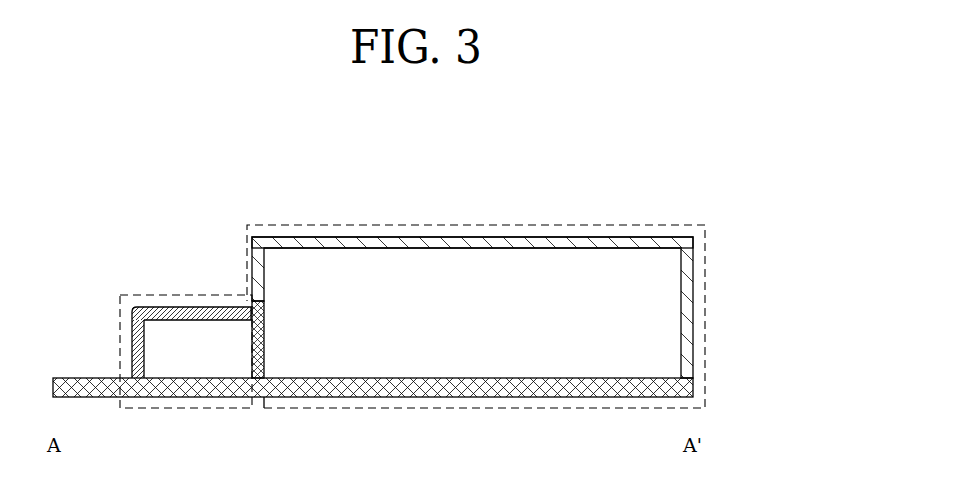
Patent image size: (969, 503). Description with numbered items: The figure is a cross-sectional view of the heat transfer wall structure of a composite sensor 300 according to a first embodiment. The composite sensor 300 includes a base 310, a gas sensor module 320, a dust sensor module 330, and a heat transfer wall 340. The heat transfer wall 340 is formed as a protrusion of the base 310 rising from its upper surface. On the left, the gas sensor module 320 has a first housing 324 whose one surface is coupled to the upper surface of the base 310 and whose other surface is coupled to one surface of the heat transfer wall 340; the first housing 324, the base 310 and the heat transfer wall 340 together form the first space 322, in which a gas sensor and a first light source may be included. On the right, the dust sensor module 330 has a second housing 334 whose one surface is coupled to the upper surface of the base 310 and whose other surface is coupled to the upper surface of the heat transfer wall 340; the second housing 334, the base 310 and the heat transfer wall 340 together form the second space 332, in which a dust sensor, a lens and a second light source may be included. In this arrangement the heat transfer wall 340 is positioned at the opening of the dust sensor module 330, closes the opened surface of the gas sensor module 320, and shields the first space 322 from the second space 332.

The composite sensor 300 is at (632, 176).
The base 310 is at (640, 387).
The gas sensor module 320 is at (190, 408).
The first space 322 is at (147, 342).
The first housing 324 is at (133, 308).
The dust sensor module 330 is at (468, 408).
The second space 332 is at (642, 292).
The second housing 334 is at (463, 244).
The heat transfer wall 340 is at (249, 312).